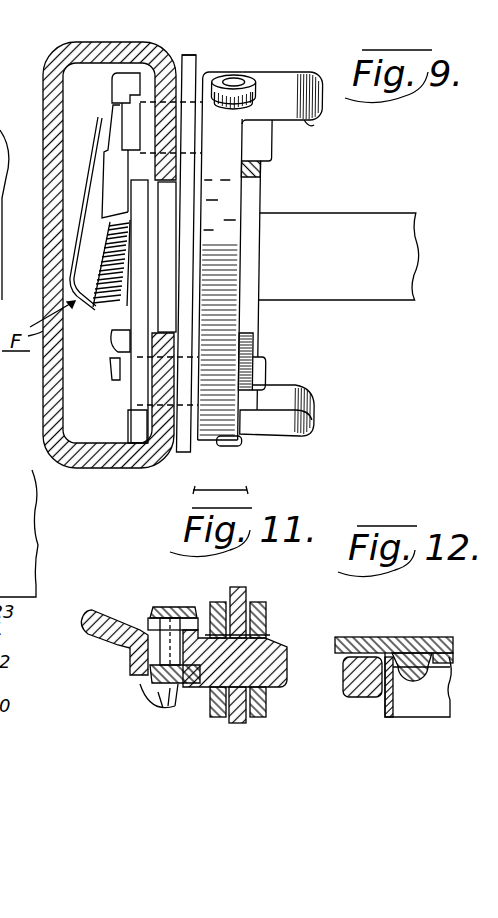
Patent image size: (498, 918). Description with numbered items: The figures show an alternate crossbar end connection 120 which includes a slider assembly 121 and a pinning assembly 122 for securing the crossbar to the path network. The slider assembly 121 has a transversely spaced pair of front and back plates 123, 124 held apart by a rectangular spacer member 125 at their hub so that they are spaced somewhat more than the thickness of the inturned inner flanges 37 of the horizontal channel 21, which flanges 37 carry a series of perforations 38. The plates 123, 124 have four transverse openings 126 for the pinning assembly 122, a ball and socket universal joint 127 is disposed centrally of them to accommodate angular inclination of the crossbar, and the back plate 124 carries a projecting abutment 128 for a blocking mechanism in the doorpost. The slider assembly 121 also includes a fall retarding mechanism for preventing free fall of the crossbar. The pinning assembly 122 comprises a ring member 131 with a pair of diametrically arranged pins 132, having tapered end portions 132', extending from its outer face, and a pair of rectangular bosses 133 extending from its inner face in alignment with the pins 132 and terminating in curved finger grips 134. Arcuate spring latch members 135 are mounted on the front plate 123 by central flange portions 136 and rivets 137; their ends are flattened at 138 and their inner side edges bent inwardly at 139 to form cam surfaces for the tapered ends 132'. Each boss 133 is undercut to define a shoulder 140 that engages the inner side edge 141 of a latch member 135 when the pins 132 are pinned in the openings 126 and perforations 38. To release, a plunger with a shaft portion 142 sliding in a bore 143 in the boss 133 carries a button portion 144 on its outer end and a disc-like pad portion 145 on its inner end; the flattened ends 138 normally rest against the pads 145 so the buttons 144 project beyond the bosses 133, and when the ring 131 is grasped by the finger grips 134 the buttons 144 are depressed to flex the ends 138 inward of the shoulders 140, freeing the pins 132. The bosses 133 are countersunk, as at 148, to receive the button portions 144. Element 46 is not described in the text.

In FIG. 9, the horizontal channel 21 is at (43, 283).
In FIG. 9, the inner flanges 37 is at (137, 113).
In FIG. 11, the inner flanges 37 is at (245, 725).
In FIG. 11, the perforations 38 is at (233, 722).
In FIG. 9, the support plate 46 is at (393, 222).
In FIG. 9, the crossbar end connection 120 is at (170, 466).
In FIG. 9, the slider assembly 121 is at (192, 54).
In FIG. 9, the pinning assembly 122 is at (278, 442).
In FIG. 9, the front plate 123 is at (187, 454).
In FIG. 11, the front plate 123 is at (215, 722).
In FIG. 12, the front plate 123 is at (355, 637).
In FIG. 9, the back plate 124 is at (128, 416).
In FIG. 11, the back plate 124 is at (263, 720).
In FIG. 9, the spacer member 125 is at (168, 308).
In FIG. 9, the transverse openings 126 is at (184, 132).
In FIG. 11, the transverse openings 126 is at (250, 636).
In FIG. 11, the universal joint 127 is at (143, 664).
In FIG. 9, the projecting abutment 128 is at (112, 90).
In FIG. 9, the ring member 131 is at (236, 448).
In FIG. 11, the ring member 131 is at (205, 637).
In FIG. 12, the ring member 131 is at (365, 698).
In FIG. 9, the pins 132 is at (69, 247).
In FIG. 11, the pins 132 is at (252, 645).
In FIG. 11, the tapered end portions 132' is at (300, 703).
In FIG. 9, the bosses 133 is at (262, 147).
In FIG. 11, the bosses 133 is at (130, 668).
In FIG. 9, the finger grips 134 is at (312, 126).
In FIG. 11, the finger grips 134 is at (88, 615).
In FIG. 9, the latch members 135 is at (263, 193).
In FIG. 12, the latch members 135 is at (420, 706).
In FIG. 11, the flange portions 136 is at (162, 704).
In FIG. 12, the flange portions 136 is at (468, 638).
In FIG. 12, the rivets 137 is at (418, 654).
In FIG. 11, the flattened ends 138 is at (155, 694).
In FIG. 9, the inwardly bent side edge portions 139 is at (257, 355).
In FIG. 11, the inwardly bent side edge portions 139 is at (150, 688).
In FIG. 11, the shoulder 140 is at (170, 706).
In FIG. 11, the inner side edge 141 is at (183, 706).
In FIG. 11, the shaft portion 142 is at (127, 633).
In FIG. 9, the bore 143 is at (234, 79).
In FIG. 11, the bore 143 is at (100, 648).
In FIG. 9, the button portion 144 is at (249, 81).
In FIG. 11, the button portion 144 is at (172, 607).
In FIG. 11, the pad portion 145 is at (152, 676).
In FIG. 9, the countersink 148 is at (252, 103).
In FIG. 11, the countersink 148 is at (150, 618).